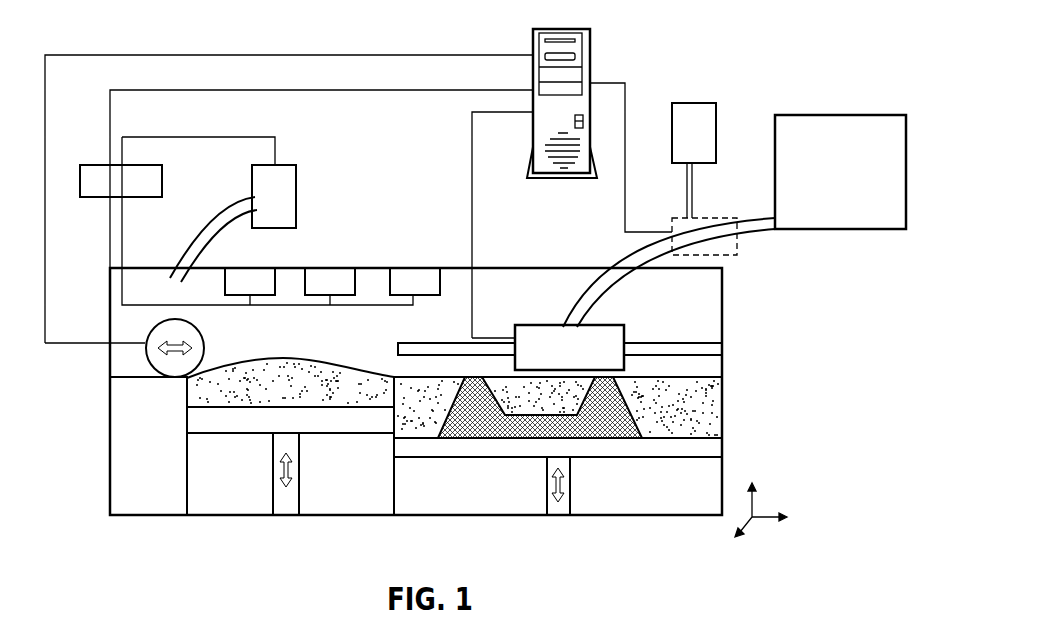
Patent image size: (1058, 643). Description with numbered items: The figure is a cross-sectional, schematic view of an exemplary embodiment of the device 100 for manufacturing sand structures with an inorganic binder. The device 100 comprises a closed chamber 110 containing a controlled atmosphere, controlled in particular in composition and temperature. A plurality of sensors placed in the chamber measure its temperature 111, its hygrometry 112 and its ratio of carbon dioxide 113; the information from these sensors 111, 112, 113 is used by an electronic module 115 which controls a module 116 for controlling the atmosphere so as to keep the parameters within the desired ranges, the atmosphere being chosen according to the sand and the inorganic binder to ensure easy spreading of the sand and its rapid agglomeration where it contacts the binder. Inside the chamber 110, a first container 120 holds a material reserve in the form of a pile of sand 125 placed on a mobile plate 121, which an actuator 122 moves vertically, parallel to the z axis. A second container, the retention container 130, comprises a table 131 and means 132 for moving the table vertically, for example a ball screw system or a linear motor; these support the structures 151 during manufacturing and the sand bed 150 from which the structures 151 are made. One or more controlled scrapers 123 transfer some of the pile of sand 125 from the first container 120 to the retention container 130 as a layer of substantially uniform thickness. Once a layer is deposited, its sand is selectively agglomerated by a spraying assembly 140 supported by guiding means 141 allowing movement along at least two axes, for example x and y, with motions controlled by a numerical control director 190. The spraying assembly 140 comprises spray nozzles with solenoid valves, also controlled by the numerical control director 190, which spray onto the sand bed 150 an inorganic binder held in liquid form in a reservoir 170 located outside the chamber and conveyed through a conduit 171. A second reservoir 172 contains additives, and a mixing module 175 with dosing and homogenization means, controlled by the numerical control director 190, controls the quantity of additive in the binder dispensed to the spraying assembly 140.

The device 100 is at (790, 392).
The closed chamber 110 is at (722, 330).
The temperature sensor 111 is at (253, 268).
The hygrometry sensor 112 is at (330, 268).
The CO2 ratio sensor 113 is at (413, 268).
The electronic module 115 is at (97, 165).
The module for controlling the atmosphere 116 is at (297, 183).
The first container 120 is at (203, 485).
The mobile plate 121 is at (328, 437).
The actuator 122 is at (273, 473).
The controlled scraper 123 is at (145, 348).
The pile of sand 125 is at (232, 380).
The retention container 130 is at (428, 478).
The table 131 is at (687, 457).
The means for moving vertically the table 132 is at (543, 487).
The spraying assembly 140 is at (535, 325).
The guiding means 141 is at (653, 343).
The sand bed 150 is at (700, 392).
The structure 151 is at (597, 415).
The reservoir 170 is at (907, 162).
The conduit 171 is at (613, 270).
The second reservoir 172 is at (717, 118).
The mixing module 175 is at (713, 218).
The numerical control director 190 is at (590, 58).